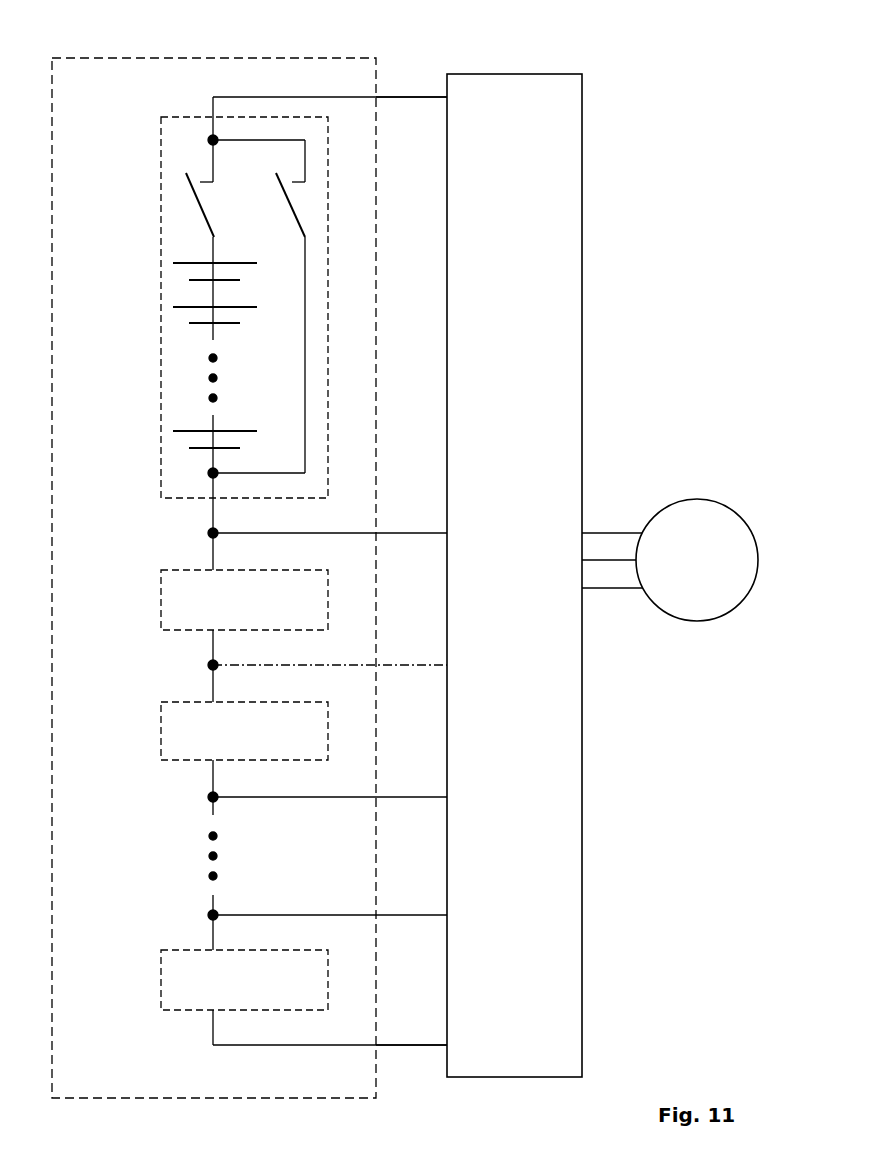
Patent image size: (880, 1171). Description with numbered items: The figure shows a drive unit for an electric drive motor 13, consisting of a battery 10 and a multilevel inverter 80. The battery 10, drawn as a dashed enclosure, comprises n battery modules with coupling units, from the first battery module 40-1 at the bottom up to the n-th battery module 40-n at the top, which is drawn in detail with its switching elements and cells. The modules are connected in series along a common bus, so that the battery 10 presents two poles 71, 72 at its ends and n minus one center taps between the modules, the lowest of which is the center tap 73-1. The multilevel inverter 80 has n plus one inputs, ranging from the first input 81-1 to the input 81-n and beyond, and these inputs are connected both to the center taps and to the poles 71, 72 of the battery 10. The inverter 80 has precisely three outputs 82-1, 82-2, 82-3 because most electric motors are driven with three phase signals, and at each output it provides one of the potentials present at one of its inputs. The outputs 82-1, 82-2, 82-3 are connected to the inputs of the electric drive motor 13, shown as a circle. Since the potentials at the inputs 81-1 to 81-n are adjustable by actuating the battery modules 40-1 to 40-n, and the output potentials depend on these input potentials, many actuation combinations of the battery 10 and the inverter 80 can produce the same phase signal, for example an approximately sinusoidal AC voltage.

The battery 10 is at (250, 58).
The pole of the battery 72 is at (213, 97).
The battery module 40-n is at (161, 151).
The center tap 73-1 is at (205, 916).
The battery module 40-1 is at (161, 981).
The pole of the battery 71 is at (213, 1046).
The input of the multilevel inverter 81-n is at (412, 533).
The input of the multilevel inverter 81-1 is at (412, 1045).
The multilevel inverter 80 is at (505, 74).
The output of the multilevel inverter 82-3 is at (612, 533).
The output of the multilevel inverter 82-2 is at (601, 562).
The output of the multilevel inverter 82-1 is at (612, 588).
The electric drive motor 13 is at (698, 622).